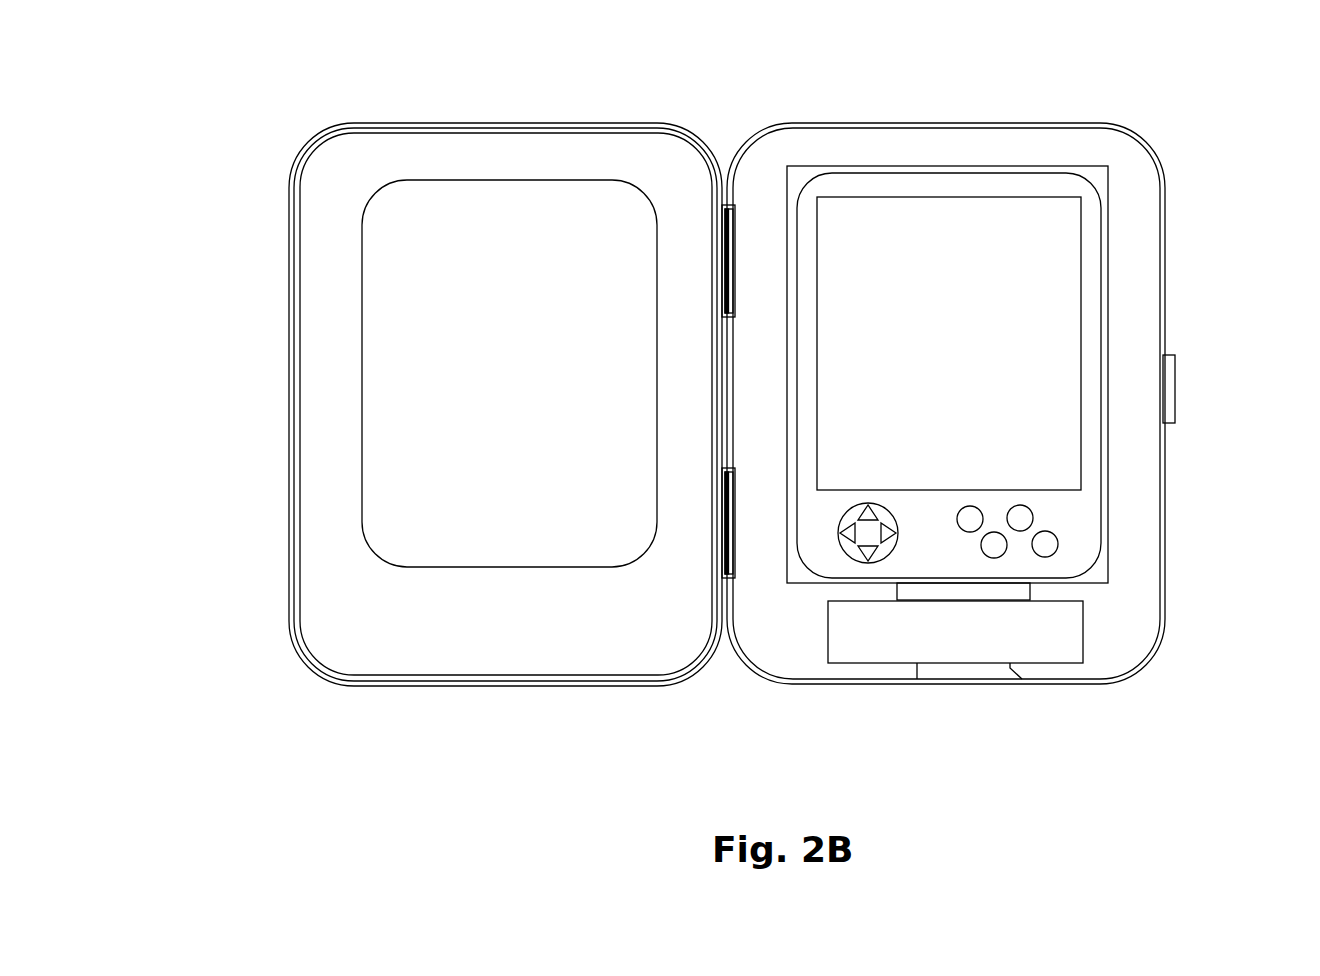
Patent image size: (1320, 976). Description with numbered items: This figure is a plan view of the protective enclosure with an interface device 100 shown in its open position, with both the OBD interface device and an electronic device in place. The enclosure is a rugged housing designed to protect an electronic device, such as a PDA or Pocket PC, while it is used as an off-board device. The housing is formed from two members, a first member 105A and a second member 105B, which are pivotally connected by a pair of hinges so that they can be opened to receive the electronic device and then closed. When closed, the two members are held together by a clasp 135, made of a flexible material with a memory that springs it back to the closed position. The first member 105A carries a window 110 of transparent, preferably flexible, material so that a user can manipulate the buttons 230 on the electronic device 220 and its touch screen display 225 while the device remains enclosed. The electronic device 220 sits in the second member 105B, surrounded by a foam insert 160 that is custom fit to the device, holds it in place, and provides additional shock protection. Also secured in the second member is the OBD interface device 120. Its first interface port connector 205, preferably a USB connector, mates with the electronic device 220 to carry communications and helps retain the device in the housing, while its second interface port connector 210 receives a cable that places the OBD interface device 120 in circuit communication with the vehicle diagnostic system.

The protective enclosure with an interface device 100 is at (700, 44).
The first member 105A is at (288, 300).
The second member 105B is at (1167, 313).
The window 110 is at (362, 490).
The OBD interface device 120 is at (1085, 623).
The clasp 135 is at (1176, 378).
The foam insert 160 is at (1105, 259).
The first interface port connector 205 is at (1030, 592).
The second interface port connector 210 is at (1052, 683).
The electronic device 220 is at (1100, 227).
The touch screen display 225 is at (1083, 435).
The buttons 230 is at (1033, 517).